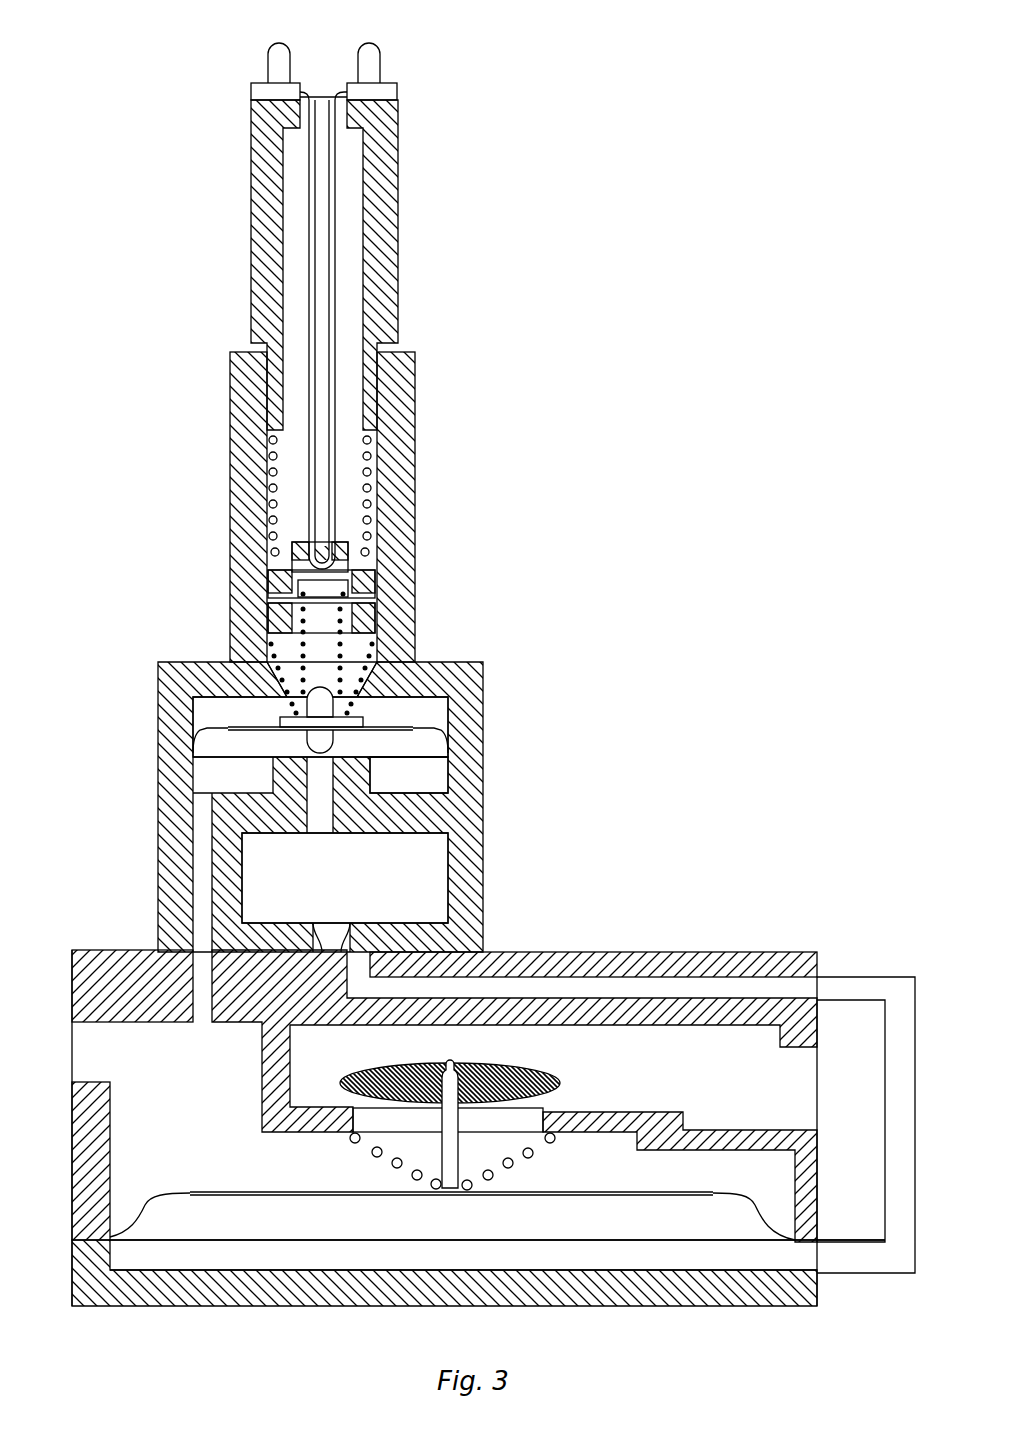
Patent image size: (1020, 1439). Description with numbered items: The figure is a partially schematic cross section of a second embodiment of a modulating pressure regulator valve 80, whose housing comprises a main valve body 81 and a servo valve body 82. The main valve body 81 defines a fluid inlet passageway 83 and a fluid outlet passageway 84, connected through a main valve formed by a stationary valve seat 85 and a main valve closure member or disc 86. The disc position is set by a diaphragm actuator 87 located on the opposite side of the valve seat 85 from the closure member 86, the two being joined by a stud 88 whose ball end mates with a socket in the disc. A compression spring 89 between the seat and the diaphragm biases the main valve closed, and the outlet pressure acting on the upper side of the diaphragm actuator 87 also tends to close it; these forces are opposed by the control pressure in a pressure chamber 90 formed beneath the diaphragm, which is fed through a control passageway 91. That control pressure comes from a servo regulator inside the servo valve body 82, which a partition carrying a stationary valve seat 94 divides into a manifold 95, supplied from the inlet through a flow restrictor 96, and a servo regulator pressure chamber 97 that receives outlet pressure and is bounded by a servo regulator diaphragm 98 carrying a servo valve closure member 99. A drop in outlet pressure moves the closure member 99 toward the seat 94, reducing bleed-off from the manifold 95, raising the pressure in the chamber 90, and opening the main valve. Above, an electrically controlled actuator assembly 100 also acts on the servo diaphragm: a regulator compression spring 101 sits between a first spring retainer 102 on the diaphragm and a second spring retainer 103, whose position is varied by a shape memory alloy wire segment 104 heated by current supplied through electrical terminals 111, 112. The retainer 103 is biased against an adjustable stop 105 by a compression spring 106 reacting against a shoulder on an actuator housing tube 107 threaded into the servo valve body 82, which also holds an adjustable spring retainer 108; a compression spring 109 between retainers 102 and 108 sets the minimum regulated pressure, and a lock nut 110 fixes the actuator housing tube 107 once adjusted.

The pressure regulator valve 80 is at (752, 787).
The main valve body 81 is at (730, 950).
The servo valve body 82 is at (482, 812).
The fluid inlet passageway 83 is at (775, 1087).
The fluid outlet passageway 84 is at (107, 1043).
The stationary valve seat 85 is at (692, 1098).
The main valve closure member 86 is at (510, 1075).
The diaphragm actuator 87 is at (217, 1195).
The stud 88 is at (440, 1160).
The compression spring 89 is at (510, 1170).
The pressure chamber 90 is at (340, 1255).
The control passageway 91 is at (838, 975).
The stationary valve seat 94 is at (360, 728).
The manifold 95 is at (400, 877).
The flow restrictor 96 is at (345, 912).
The servo regulator pressure chamber 97 is at (420, 773).
The servo regulator diaphragm 98 is at (200, 755).
The servo valve closure member 99 is at (300, 736).
The actuator assembly 100 is at (203, 236).
The regulator compression spring 101 is at (340, 643).
The first spring retainer 102 is at (340, 700).
The second spring retainer 103 is at (352, 545).
The wire segment 104 is at (338, 215).
The adjustable stop 105 is at (377, 603).
The compression spring 106 is at (372, 485).
The actuator housing tube 107 is at (398, 292).
The adjustable spring retainer 108 is at (265, 600).
The compression spring 109 is at (280, 680).
The lock nut 110 is at (415, 358).
The electrical terminal 111 is at (283, 44).
The electrical terminal 112 is at (380, 57).